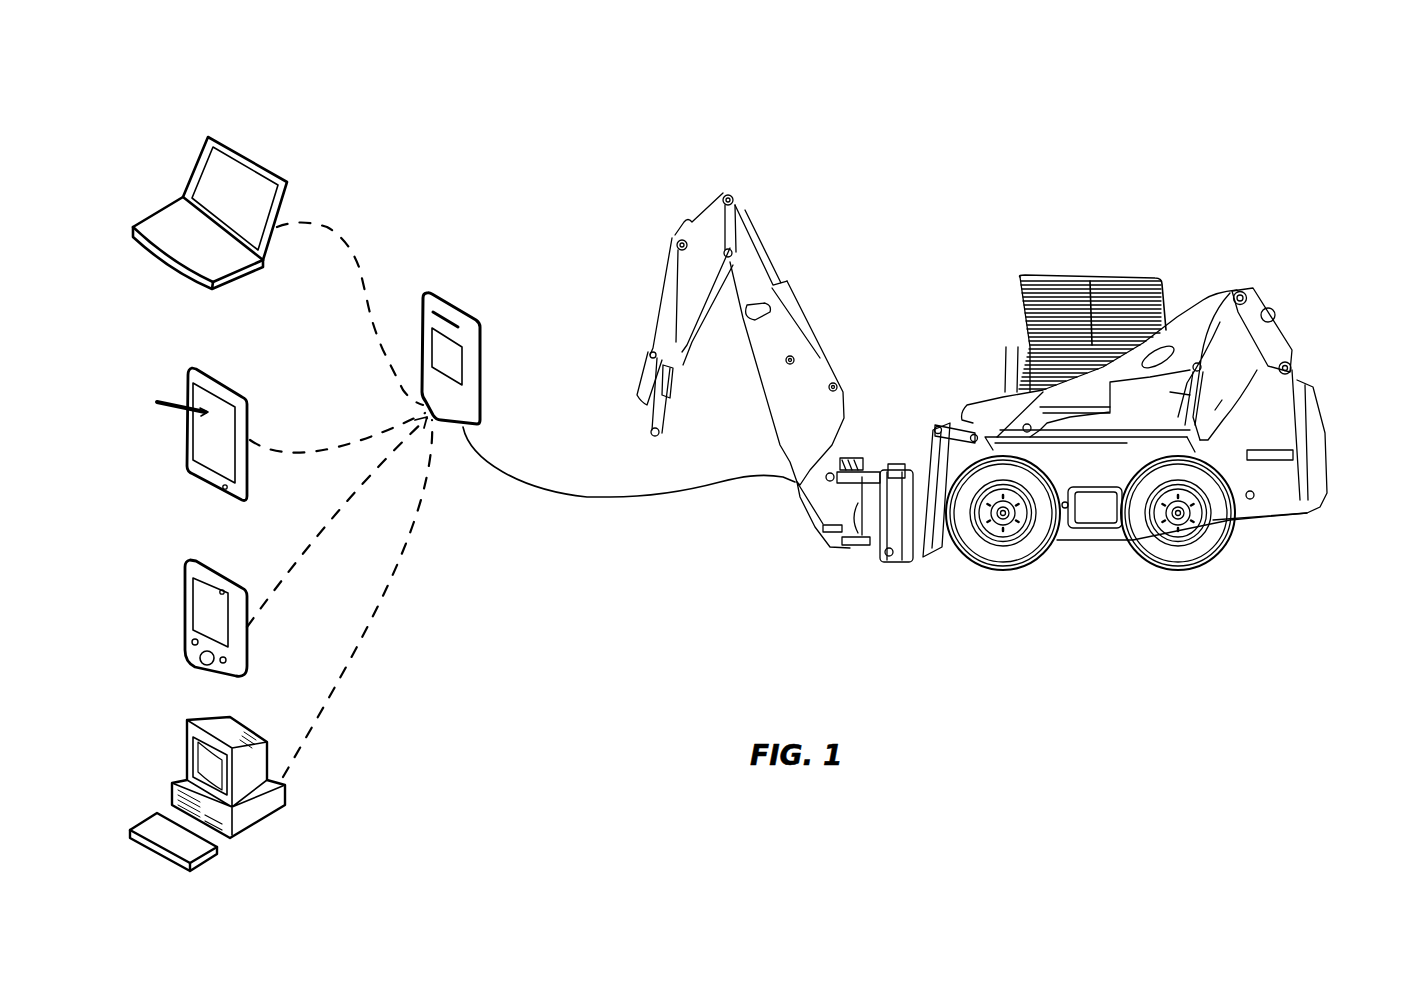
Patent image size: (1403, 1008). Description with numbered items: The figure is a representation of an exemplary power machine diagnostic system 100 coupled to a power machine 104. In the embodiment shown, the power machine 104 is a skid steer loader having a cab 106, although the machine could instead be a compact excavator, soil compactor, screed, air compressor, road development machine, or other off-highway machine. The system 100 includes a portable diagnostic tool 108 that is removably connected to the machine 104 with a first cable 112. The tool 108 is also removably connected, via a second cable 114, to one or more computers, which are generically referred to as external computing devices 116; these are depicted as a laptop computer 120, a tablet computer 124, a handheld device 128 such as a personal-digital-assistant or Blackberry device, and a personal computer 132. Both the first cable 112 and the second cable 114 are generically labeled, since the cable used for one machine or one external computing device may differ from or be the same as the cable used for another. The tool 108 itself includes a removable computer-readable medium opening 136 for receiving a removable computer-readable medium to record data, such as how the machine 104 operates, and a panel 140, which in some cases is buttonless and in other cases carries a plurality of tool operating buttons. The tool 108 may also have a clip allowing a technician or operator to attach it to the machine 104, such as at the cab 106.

The power machine diagnostic system 100 is at (553, 632).
The power machine 104 is at (1290, 348).
The cab 106 is at (1168, 297).
The portable diagnostic tool 108 is at (462, 308).
The first cable 112 is at (610, 480).
The second cable 114 is at (376, 322).
The external computing devices 116 is at (317, 95).
The laptop computer 120 is at (270, 170).
The tablet computer 124 is at (240, 393).
The handheld device 128 is at (197, 562).
The personal computer 132 is at (203, 720).
The removable computer-readable medium opening 136 is at (433, 312).
The panel 140 is at (462, 368).